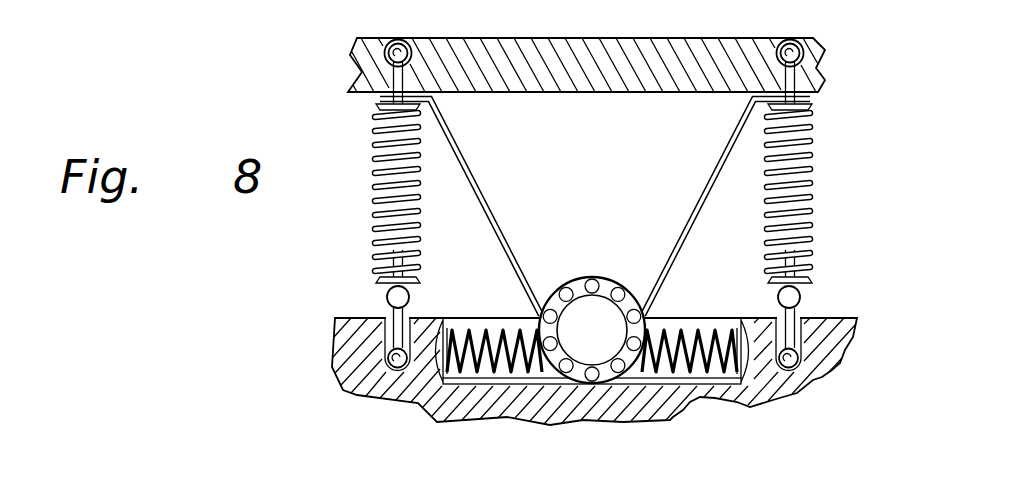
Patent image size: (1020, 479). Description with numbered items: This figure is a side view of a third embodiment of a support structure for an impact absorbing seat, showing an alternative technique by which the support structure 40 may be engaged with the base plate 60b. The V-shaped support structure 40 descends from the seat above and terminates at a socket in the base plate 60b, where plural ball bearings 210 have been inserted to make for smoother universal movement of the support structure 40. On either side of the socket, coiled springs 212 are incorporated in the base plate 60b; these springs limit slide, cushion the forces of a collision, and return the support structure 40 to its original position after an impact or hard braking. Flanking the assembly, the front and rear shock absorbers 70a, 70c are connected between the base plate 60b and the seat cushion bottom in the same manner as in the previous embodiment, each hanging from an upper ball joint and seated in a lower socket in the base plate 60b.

The support structure 40 is at (479, 203).
The base plate 60b is at (840, 318).
The front shock absorber 70a is at (378, 197).
The rear shock absorber 70c is at (813, 204).
The ball bearings 210 is at (594, 382).
The coiled springs 212 is at (697, 320).